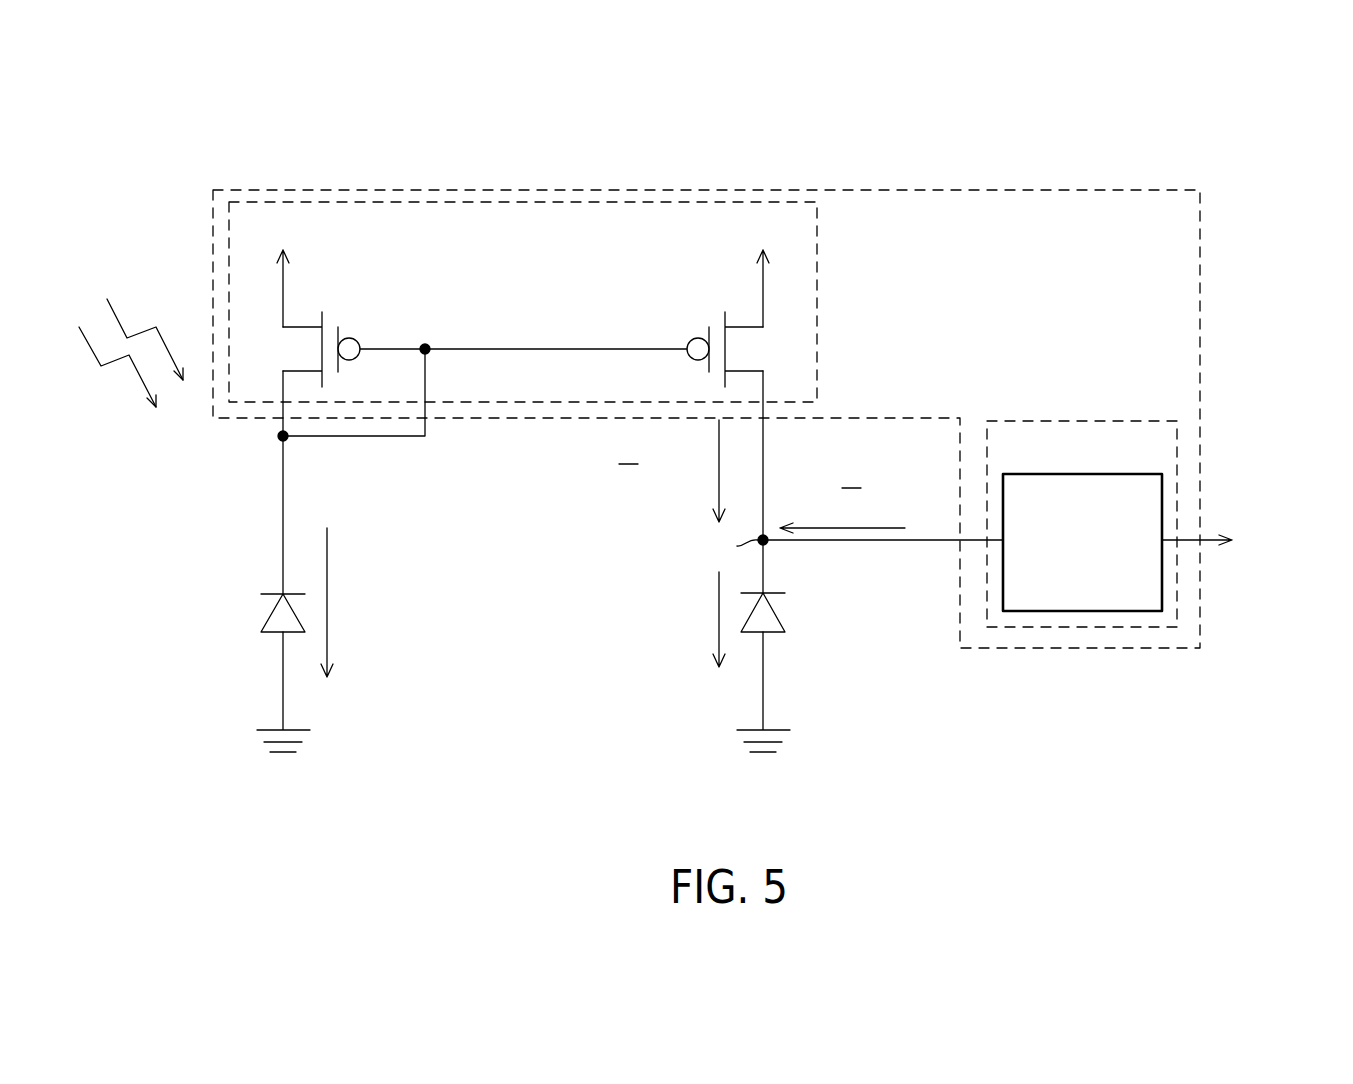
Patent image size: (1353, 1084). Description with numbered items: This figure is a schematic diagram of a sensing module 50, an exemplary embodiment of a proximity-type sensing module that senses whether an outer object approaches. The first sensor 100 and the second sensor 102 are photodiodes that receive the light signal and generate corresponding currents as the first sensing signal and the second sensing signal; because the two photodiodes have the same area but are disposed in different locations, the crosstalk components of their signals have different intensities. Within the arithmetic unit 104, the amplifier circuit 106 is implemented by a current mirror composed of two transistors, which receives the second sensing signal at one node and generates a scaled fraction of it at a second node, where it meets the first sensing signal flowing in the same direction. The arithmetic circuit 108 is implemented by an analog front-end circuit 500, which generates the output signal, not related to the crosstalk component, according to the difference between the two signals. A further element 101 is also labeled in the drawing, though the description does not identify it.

The sensing module 50 is at (1250, 176).
The first sensor 100 is at (777, 612).
The node 101 is at (281, 438).
The second sensor 102 is at (268, 616).
The arithmetic unit 104 is at (1200, 253).
The amplifier circuit 106 is at (817, 305).
The arithmetic circuit 108 is at (1087, 421).
The analog front-end circuit 500 is at (1085, 474).